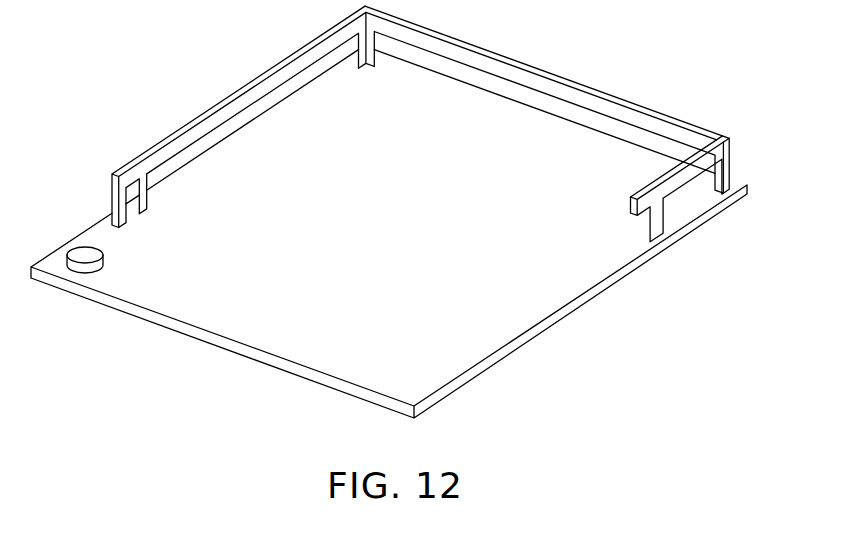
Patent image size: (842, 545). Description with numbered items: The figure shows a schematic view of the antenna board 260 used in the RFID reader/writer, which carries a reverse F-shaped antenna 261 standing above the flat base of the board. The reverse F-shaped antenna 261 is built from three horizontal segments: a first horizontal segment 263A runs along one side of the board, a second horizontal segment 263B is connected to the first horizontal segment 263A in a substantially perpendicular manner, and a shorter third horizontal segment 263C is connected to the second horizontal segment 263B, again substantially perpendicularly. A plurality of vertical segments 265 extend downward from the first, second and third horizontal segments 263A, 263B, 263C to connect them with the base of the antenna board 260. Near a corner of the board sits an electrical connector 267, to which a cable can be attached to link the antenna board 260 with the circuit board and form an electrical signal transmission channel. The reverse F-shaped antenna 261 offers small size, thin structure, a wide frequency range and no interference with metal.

The reverse F-shaped antenna 261 is at (118, 108).
The antenna board 260 is at (530, 317).
The first horizontal segment 263A is at (258, 78).
The second horizontal segment 263B is at (512, 62).
The third horizontal segment 263C is at (678, 180).
The vertical segments 265 is at (112, 194).
The electrical connector 267 is at (85, 259).